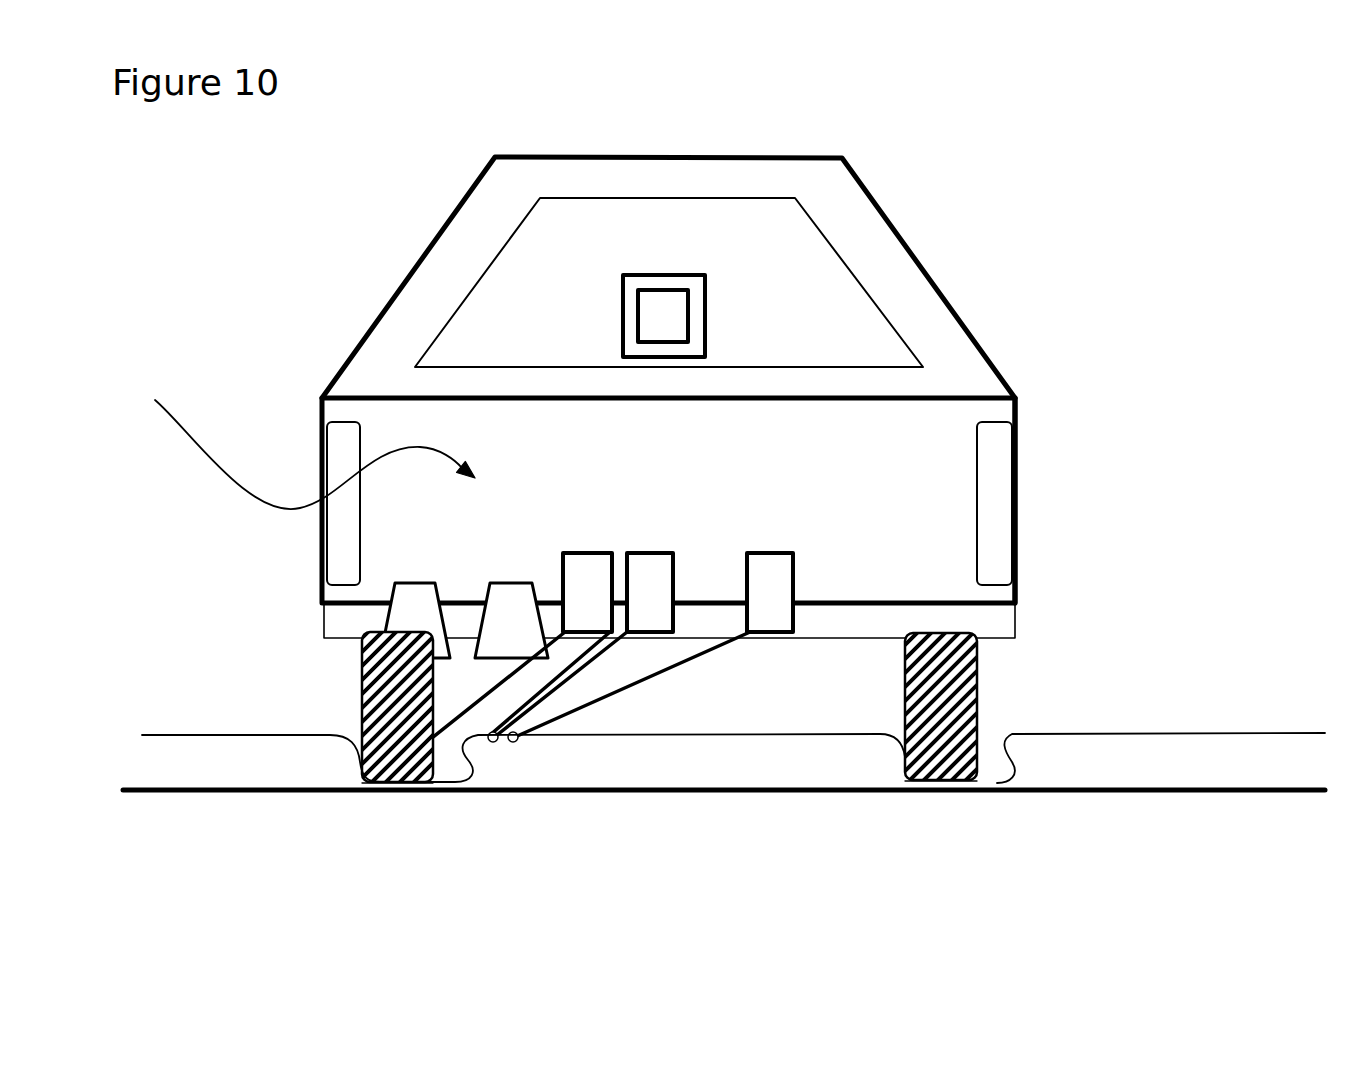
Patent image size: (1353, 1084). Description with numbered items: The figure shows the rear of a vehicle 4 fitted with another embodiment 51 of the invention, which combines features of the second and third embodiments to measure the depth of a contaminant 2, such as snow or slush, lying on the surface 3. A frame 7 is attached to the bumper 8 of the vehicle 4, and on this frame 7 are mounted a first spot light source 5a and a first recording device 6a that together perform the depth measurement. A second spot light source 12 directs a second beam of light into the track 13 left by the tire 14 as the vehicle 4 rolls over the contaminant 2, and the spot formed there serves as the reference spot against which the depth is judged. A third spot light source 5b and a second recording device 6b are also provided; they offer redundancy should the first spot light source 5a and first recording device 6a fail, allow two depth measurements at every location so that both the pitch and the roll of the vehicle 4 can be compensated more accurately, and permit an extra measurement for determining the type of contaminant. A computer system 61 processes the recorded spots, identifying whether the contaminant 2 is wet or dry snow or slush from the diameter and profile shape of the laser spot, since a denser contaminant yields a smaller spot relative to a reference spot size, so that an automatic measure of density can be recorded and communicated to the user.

The contaminant 2 is at (191, 772).
The surface 3 is at (177, 855).
The vehicle 4 is at (353, 385).
The first spot light source 5a is at (643, 553).
The third spot light source 5b is at (778, 553).
The first recording device 6a is at (392, 617).
The second recording device 6b is at (505, 600).
The frame 7 is at (1017, 593).
The bumper 8 is at (1020, 633).
The second spot light source 12 is at (580, 553).
The track 13 is at (462, 773).
The tire 14 is at (373, 693).
The embodiment 51 is at (294, 440).
The computer system 61 is at (657, 275).